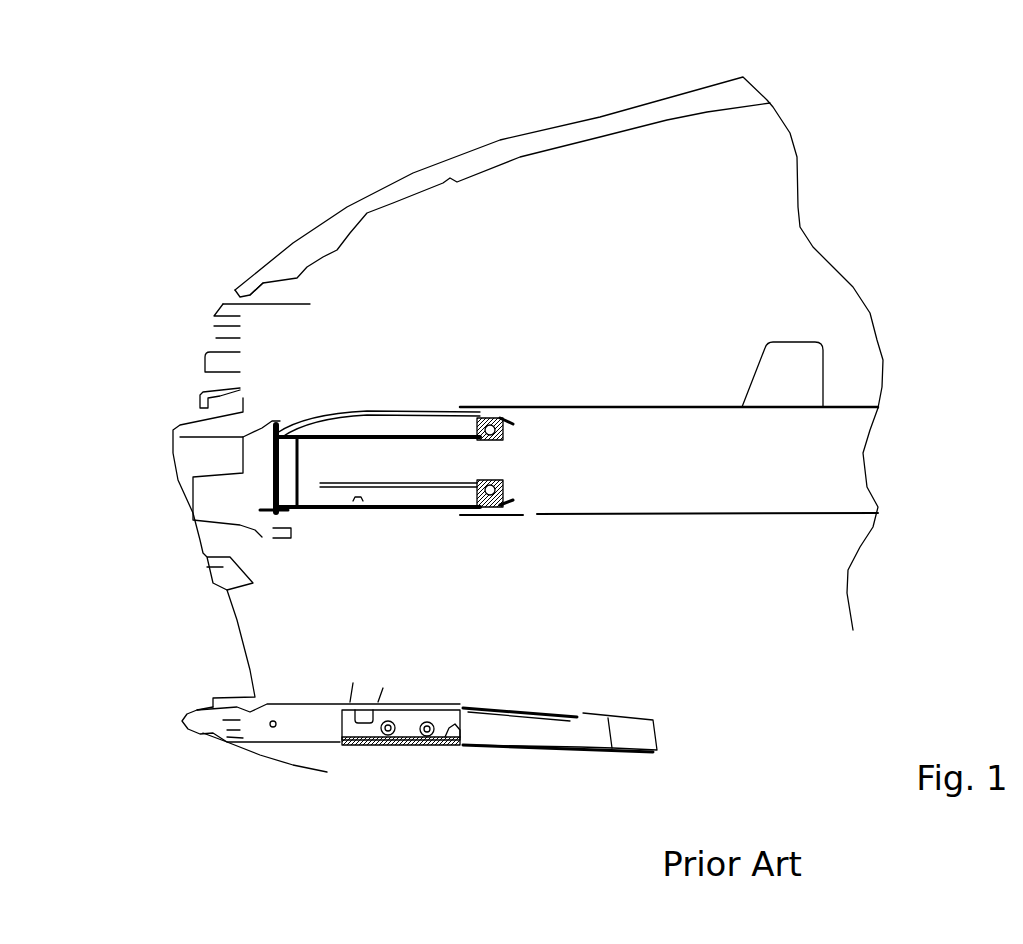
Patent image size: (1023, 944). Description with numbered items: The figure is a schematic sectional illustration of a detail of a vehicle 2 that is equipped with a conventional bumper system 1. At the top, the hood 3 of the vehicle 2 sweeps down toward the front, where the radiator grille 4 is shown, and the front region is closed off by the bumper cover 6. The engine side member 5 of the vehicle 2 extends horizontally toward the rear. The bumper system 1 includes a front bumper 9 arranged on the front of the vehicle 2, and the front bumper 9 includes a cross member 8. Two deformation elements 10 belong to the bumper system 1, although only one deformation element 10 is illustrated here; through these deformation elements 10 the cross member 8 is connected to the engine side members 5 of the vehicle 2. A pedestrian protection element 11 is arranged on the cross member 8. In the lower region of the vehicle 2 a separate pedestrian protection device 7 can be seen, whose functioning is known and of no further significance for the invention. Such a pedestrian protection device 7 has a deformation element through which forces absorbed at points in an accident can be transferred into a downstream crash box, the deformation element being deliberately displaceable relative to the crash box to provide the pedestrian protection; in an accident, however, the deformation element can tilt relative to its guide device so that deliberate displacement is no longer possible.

The bumper system 1 is at (386, 411).
The vehicle 2 is at (412, 140).
The hood 3 is at (558, 120).
The radiator grille 4 is at (217, 338).
The engine side member 5 is at (700, 407).
The bumper cover 6 is at (175, 546).
The pedestrian protection device 7 is at (485, 693).
The cross member 8 is at (297, 437).
The front bumper 9 is at (322, 408).
The deformation element 10 is at (434, 400).
The pedestrian protection element 11 is at (257, 463).